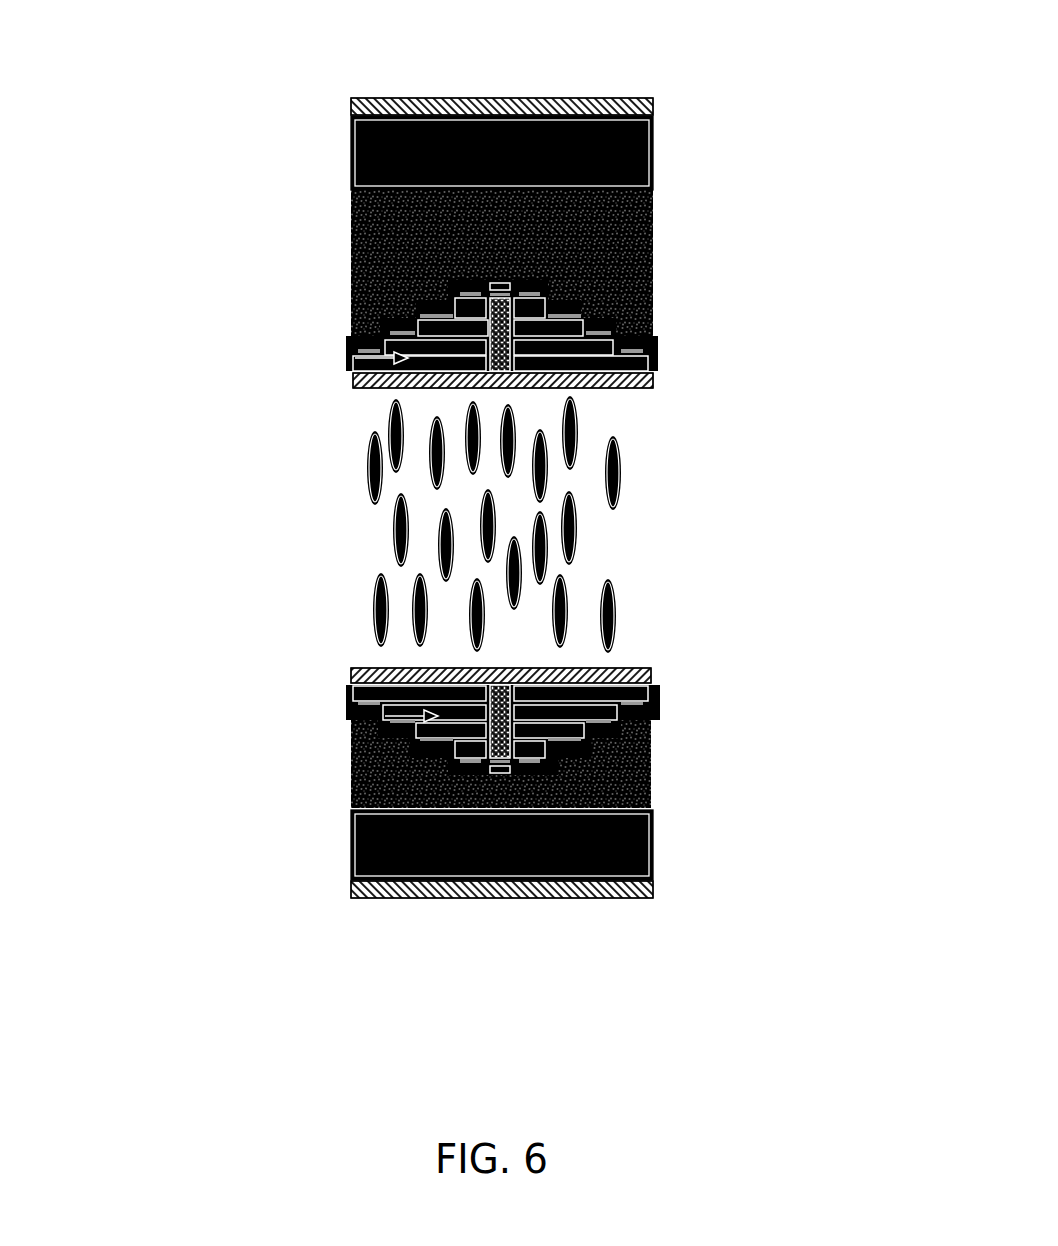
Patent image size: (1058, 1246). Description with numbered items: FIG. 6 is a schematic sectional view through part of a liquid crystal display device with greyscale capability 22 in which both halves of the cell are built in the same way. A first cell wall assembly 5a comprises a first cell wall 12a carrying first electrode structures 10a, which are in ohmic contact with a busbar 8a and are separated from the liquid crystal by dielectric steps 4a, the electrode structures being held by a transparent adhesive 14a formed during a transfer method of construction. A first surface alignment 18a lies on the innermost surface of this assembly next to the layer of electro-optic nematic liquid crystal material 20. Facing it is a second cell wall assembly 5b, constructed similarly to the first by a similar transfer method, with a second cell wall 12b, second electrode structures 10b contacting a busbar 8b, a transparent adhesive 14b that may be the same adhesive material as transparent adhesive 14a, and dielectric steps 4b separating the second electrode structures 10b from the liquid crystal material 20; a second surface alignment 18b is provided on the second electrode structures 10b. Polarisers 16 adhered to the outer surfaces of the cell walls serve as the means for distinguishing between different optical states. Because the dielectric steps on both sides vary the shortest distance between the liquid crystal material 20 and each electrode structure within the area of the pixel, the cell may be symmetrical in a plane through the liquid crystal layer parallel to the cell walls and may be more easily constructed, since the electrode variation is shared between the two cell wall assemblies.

The display device with greyscale capability 22 is at (329, 926).
The polariser 16 is at (628, 88).
The first cell wall assembly 5a is at (258, 233).
The second cell wall assembly 5b is at (237, 819).
The first cell wall 12a is at (357, 150).
The second cell wall 12b is at (350, 840).
The transparent adhesive 14a is at (603, 248).
The transparent adhesive 14b is at (622, 777).
The first electrode structures 10a is at (678, 331).
The second electrode structures 10b is at (335, 698).
The busbar 8a is at (482, 328).
The busbar 8b is at (487, 723).
The dielectric steps 4a is at (345, 351).
The dielectric steps 4b is at (345, 707).
The first surface alignment 18a is at (643, 382).
The second surface alignment 18b is at (640, 660).
The electro-optic material 20 is at (651, 516).